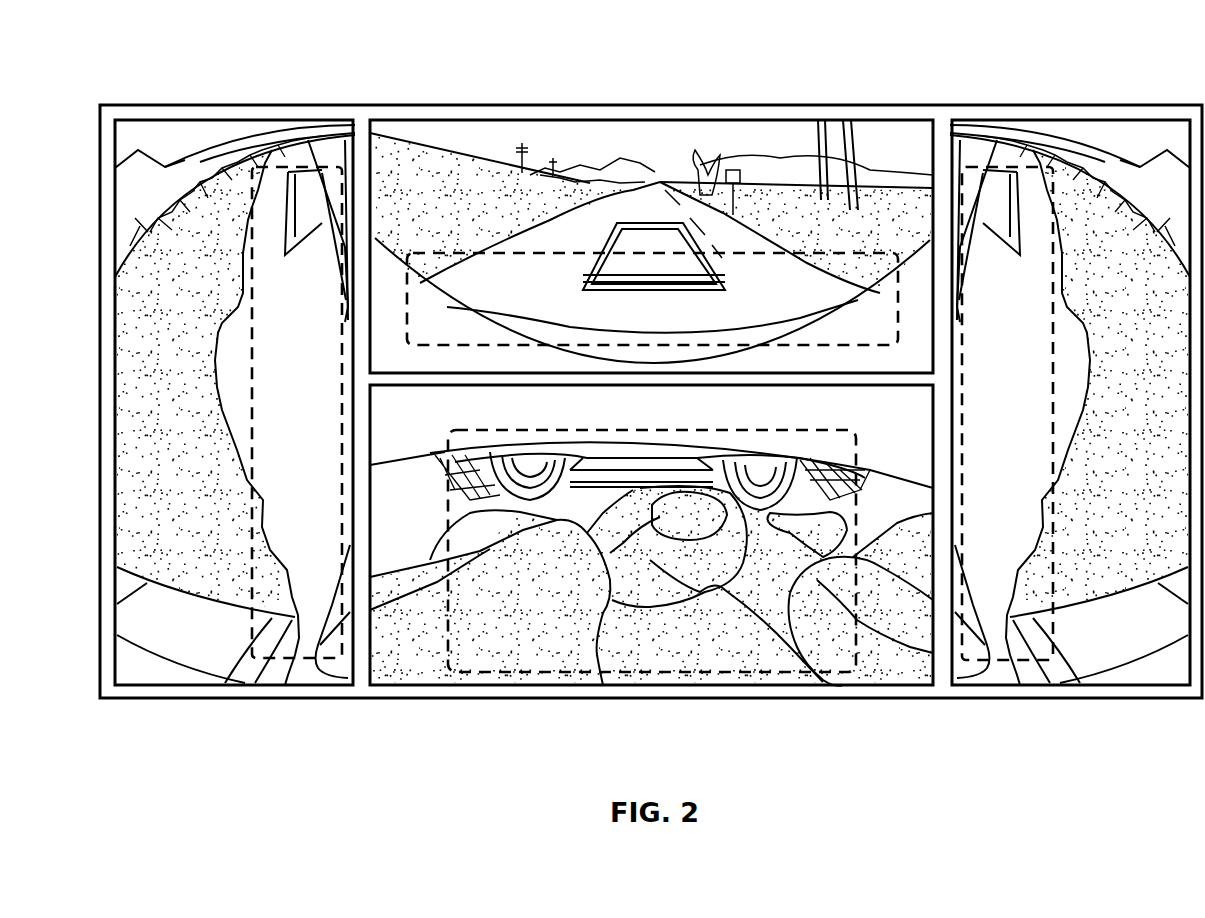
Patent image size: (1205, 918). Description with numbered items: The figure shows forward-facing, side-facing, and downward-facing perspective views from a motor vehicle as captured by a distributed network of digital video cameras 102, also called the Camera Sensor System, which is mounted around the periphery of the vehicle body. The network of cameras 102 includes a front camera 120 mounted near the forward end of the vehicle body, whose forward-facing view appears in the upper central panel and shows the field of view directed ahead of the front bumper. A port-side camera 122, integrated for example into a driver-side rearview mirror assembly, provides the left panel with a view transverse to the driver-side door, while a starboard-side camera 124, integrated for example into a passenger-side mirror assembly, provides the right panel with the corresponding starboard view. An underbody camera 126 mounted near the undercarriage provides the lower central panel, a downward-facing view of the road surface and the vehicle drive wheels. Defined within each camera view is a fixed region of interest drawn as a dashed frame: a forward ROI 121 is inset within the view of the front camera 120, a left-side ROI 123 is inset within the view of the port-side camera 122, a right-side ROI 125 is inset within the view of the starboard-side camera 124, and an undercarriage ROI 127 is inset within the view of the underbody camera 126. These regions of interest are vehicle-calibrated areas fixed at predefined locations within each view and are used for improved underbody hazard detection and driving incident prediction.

The distributed network of digital video cameras 102 is at (355, 100).
The front camera 120 is at (460, 120).
The forward ROI 121 is at (676, 180).
The port-side camera 122 is at (158, 120).
The left-side ROI 123 is at (263, 660).
The starboard-side camera 124 is at (1160, 120).
The right-side ROI 125 is at (1047, 662).
The underbody camera 126 is at (459, 686).
The undercarriage ROI 127 is at (546, 686).